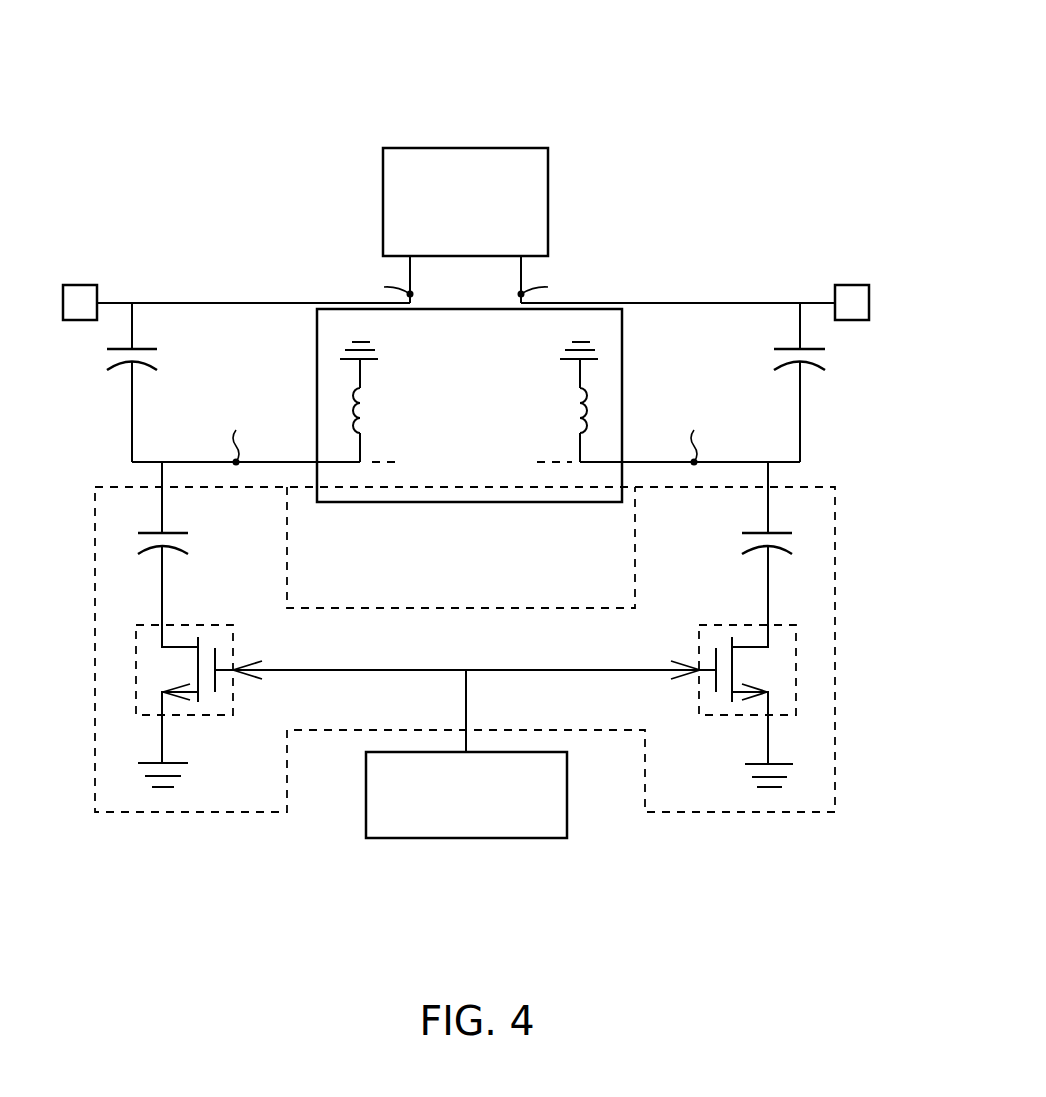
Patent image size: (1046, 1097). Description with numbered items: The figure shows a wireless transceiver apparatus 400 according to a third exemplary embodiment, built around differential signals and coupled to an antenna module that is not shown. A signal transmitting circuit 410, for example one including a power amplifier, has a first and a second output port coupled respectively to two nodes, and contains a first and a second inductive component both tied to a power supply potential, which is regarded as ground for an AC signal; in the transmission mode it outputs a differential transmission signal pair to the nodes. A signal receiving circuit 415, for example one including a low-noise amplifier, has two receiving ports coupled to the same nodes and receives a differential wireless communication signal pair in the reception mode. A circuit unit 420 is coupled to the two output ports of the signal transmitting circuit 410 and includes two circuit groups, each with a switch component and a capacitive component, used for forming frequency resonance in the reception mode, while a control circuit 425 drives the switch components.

The wireless transceiver apparatus 400 is at (723, 93).
The signal transmitting circuit 410 is at (463, 502).
The signal receiving circuit 415 is at (464, 147).
The circuit unit 420 is at (740, 812).
The control circuit 425 is at (483, 838).